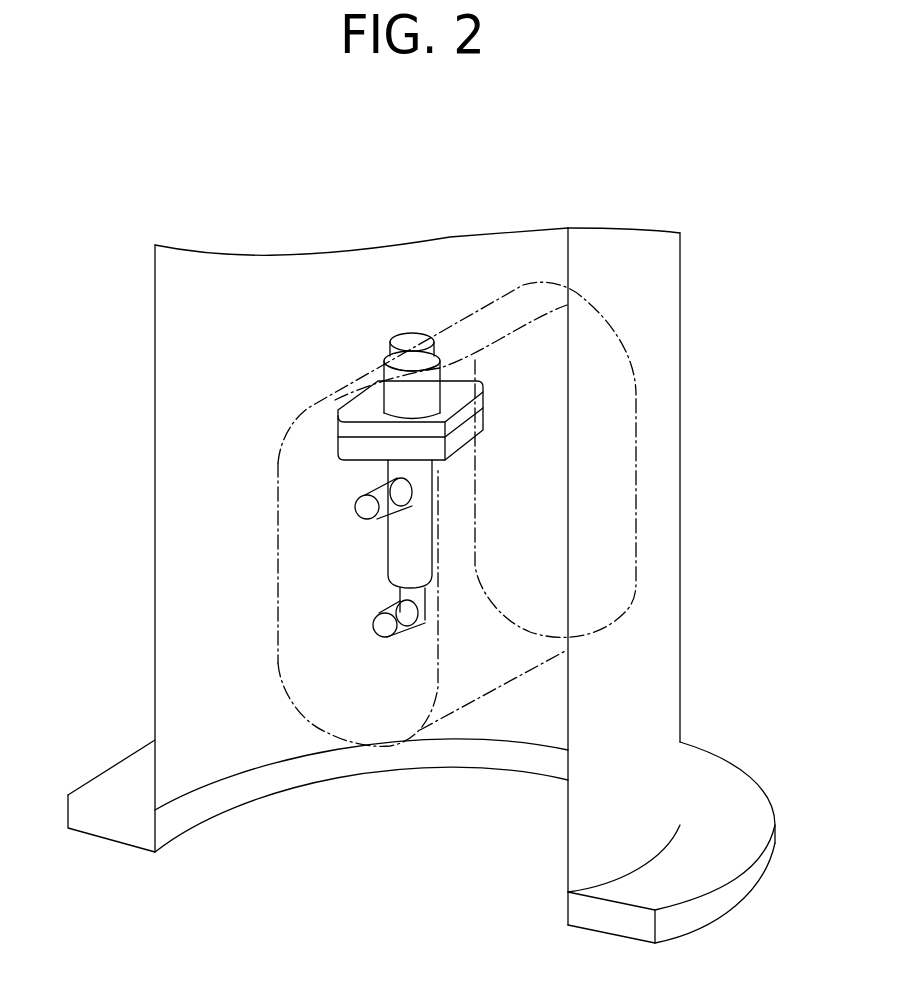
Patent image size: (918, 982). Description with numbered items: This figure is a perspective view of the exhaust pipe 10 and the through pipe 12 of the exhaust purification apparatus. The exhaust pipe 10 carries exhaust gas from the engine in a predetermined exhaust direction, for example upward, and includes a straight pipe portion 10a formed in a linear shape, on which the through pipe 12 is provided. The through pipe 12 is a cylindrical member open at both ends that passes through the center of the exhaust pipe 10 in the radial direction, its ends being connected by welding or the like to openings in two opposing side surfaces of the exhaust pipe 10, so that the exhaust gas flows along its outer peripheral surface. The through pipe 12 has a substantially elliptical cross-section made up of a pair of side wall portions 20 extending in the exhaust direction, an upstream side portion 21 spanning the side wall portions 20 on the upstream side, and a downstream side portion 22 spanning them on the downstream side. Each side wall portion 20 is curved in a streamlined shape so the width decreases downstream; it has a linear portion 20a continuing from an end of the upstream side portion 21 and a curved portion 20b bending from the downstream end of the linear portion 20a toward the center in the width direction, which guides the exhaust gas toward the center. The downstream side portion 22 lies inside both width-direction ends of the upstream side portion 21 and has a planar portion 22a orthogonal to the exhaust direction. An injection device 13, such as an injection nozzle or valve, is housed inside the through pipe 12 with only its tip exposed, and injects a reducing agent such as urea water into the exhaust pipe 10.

The exhaust pipe 10 is at (94, 524).
The straight pipe portion 10a is at (155, 533).
The through pipe 12 is at (385, 365).
The injection device 13 is at (408, 333).
The side wall portion 20 is at (276, 512).
The linear portion 20a is at (270, 561).
The curved portion 20b is at (297, 422).
The upstream side portion 21 is at (355, 742).
The downstream side portion 22 is at (408, 420).
The planar portion 22a is at (447, 346).